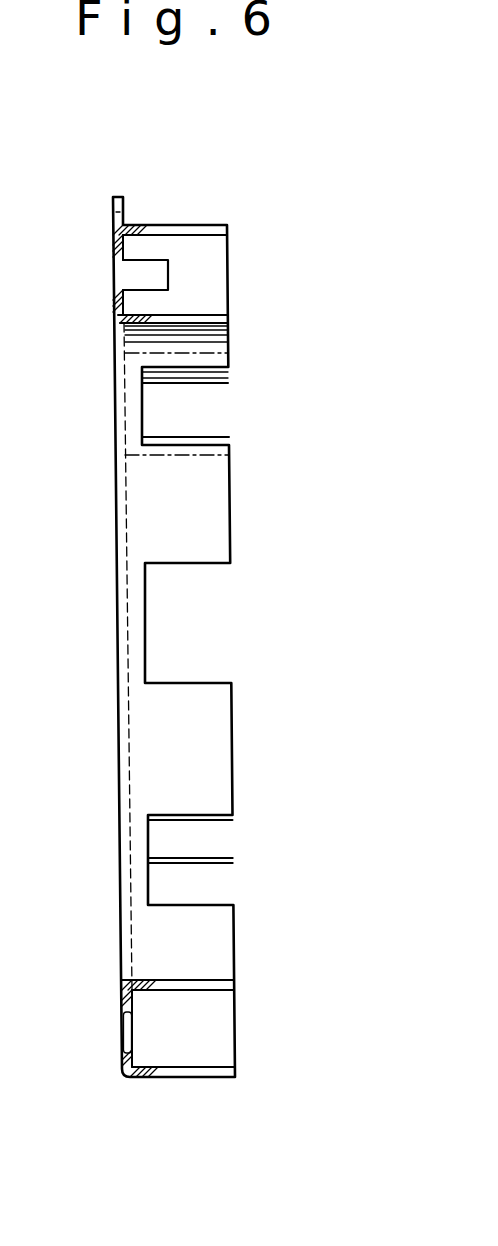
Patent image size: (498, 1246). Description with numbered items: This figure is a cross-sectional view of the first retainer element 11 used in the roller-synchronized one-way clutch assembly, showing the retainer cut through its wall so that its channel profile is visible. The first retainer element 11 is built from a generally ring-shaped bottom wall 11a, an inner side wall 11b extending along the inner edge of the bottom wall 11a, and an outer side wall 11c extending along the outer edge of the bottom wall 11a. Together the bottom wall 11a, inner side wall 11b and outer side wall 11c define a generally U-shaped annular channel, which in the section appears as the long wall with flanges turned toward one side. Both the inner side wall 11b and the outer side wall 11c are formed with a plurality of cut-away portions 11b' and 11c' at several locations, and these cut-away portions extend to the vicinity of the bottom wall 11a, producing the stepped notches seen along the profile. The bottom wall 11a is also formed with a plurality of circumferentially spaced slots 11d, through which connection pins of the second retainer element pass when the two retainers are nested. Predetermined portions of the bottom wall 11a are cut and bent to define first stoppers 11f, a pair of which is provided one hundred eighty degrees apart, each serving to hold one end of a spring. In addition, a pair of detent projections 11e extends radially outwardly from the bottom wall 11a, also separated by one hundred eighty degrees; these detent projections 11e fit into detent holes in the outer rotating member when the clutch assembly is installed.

The first retainer element 11 is at (272, 197).
The bottom wall 11a is at (113, 306).
The inner side wall 11b is at (207, 648).
The outer side wall 11c is at (177, 649).
The slot 11d is at (125, 1027).
The detent projection 11e is at (116, 197).
The first stopper 11f is at (163, 273).
The cut-away portion 11b' is at (266, 617).
The cut-away portion 11c' is at (190, 841).